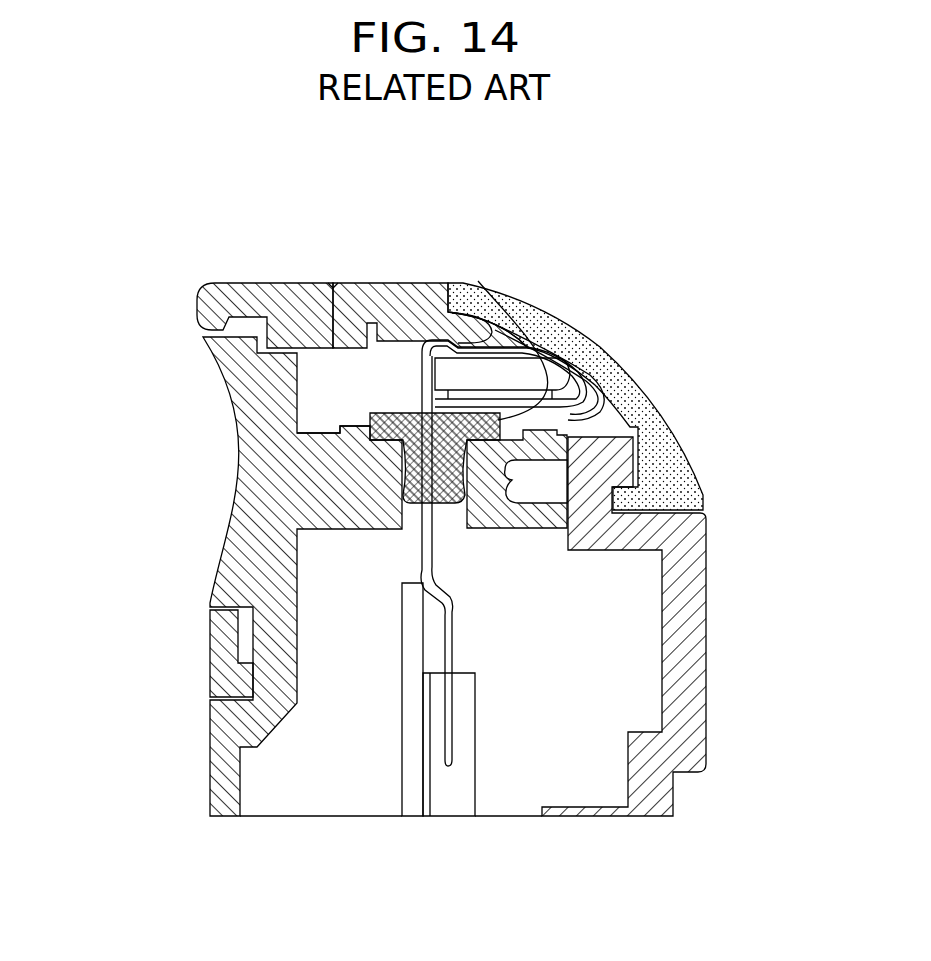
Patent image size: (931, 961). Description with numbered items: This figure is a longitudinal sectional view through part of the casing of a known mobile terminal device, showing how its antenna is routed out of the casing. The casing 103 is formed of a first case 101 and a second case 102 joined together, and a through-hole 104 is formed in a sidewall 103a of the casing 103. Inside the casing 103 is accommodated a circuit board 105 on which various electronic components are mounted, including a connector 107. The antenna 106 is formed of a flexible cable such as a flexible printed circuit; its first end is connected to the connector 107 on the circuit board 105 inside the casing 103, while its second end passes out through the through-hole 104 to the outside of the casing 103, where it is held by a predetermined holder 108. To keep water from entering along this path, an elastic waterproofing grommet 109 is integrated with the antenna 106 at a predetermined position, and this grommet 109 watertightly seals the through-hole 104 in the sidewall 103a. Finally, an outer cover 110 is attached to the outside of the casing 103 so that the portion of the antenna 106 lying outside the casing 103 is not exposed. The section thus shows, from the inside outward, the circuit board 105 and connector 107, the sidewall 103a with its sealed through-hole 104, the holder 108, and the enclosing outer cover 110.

The first case 101 is at (277, 290).
The second case 102 is at (372, 290).
The casing 103 is at (394, 199).
The sidewall 103a is at (360, 445).
The through-hole 104 is at (448, 537).
The circuit board 105 is at (420, 618).
The antenna 106 is at (600, 418).
The connector 107 is at (460, 731).
The holder 108 is at (503, 377).
The waterproofing grommet 109 is at (507, 420).
The outer cover 110 is at (677, 473).